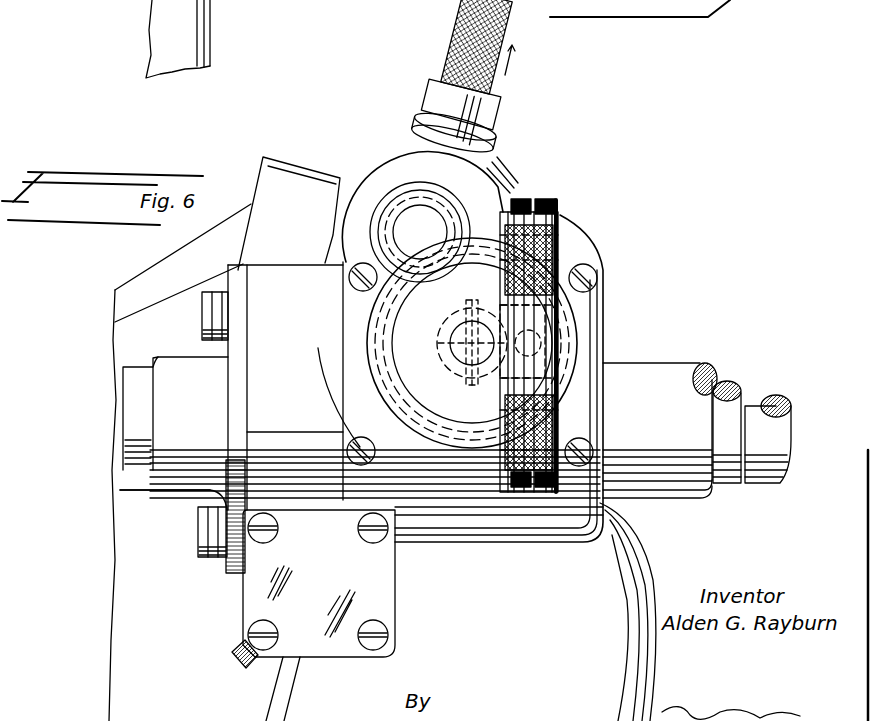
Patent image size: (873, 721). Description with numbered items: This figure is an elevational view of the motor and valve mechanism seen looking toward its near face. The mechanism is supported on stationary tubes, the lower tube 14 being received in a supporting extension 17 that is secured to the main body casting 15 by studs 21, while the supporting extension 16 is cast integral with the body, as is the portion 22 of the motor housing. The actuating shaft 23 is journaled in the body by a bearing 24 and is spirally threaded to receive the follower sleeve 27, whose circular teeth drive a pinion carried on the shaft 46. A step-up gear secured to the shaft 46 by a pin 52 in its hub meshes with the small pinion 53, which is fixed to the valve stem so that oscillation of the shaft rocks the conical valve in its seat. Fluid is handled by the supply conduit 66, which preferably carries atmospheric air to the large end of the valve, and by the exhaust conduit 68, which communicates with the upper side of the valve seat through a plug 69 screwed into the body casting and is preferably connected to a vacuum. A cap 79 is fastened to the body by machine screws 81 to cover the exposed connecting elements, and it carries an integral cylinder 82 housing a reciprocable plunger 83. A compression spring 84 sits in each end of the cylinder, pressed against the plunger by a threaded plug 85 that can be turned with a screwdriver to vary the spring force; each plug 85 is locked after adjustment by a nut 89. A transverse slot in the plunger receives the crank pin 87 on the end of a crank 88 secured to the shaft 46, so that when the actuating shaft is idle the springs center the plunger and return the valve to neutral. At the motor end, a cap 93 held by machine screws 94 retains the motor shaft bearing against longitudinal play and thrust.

The lower tube 14 is at (133, 378).
The main body casting 15 is at (717, 387).
The supporting extension 16 is at (670, 375).
The supporting extension 17 is at (375, 387).
The studs 21 is at (217, 318).
The portion of a motor housing 22 is at (343, 615).
The actuating shaft 23 is at (750, 398).
The bearing 24 is at (227, 39).
The follower sleeve 27 is at (215, 390).
The shaft 46 is at (452, 352).
The pin 52 is at (472, 312).
The small pinion 53 is at (443, 204).
The fluid supply conduit 66 is at (522, 363).
The exhaust conduit 68 is at (453, 42).
The plug 69 is at (483, 122).
The cap 79 is at (575, 333).
The machine screws 81 is at (597, 286).
The integral cylinder 82 is at (560, 412).
The reciprocable plunger 83 is at (575, 262).
The compression spring 84 is at (568, 225).
The threaded plug 85 is at (555, 203).
The crank pin 87 is at (575, 325).
The crank 88 is at (587, 358).
The nuts 89 is at (557, 206).
The cap 93 is at (267, 573).
The machine screws 94 is at (363, 623).